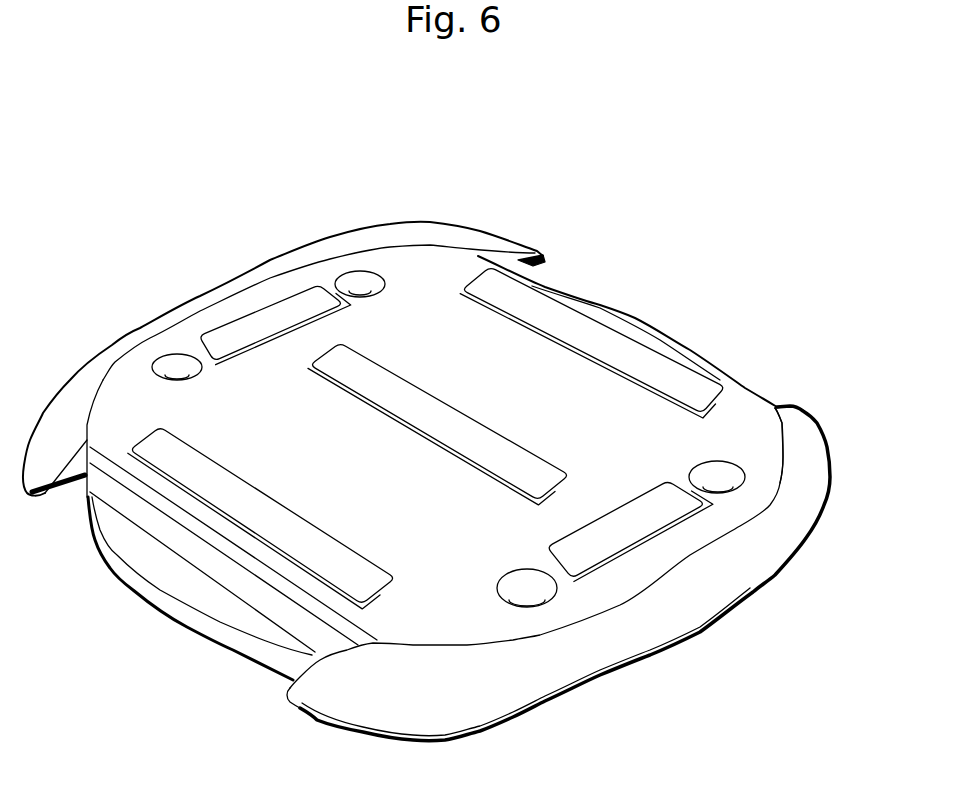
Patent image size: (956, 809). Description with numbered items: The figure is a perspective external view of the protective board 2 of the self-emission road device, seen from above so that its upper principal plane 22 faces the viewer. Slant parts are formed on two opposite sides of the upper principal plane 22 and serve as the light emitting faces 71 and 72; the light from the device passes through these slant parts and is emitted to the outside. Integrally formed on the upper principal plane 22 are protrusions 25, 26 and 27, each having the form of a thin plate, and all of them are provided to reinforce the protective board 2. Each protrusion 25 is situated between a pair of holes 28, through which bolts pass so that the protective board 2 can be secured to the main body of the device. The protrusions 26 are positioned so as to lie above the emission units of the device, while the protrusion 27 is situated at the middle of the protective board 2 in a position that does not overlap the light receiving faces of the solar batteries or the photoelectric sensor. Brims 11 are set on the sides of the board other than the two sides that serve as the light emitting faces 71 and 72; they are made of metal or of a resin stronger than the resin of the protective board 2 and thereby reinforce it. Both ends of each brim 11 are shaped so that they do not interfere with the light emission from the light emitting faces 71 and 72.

The protective board 2 is at (450, 157).
The brim 11 is at (210, 298).
The upper principal plane 22 is at (522, 372).
The protrusion 25 is at (323, 305).
The protrusion 26 is at (615, 347).
The protrusion 27 is at (527, 463).
The hole 28 is at (372, 286).
The light emitting face 71 is at (267, 602).
The light emitting face 72 is at (682, 355).